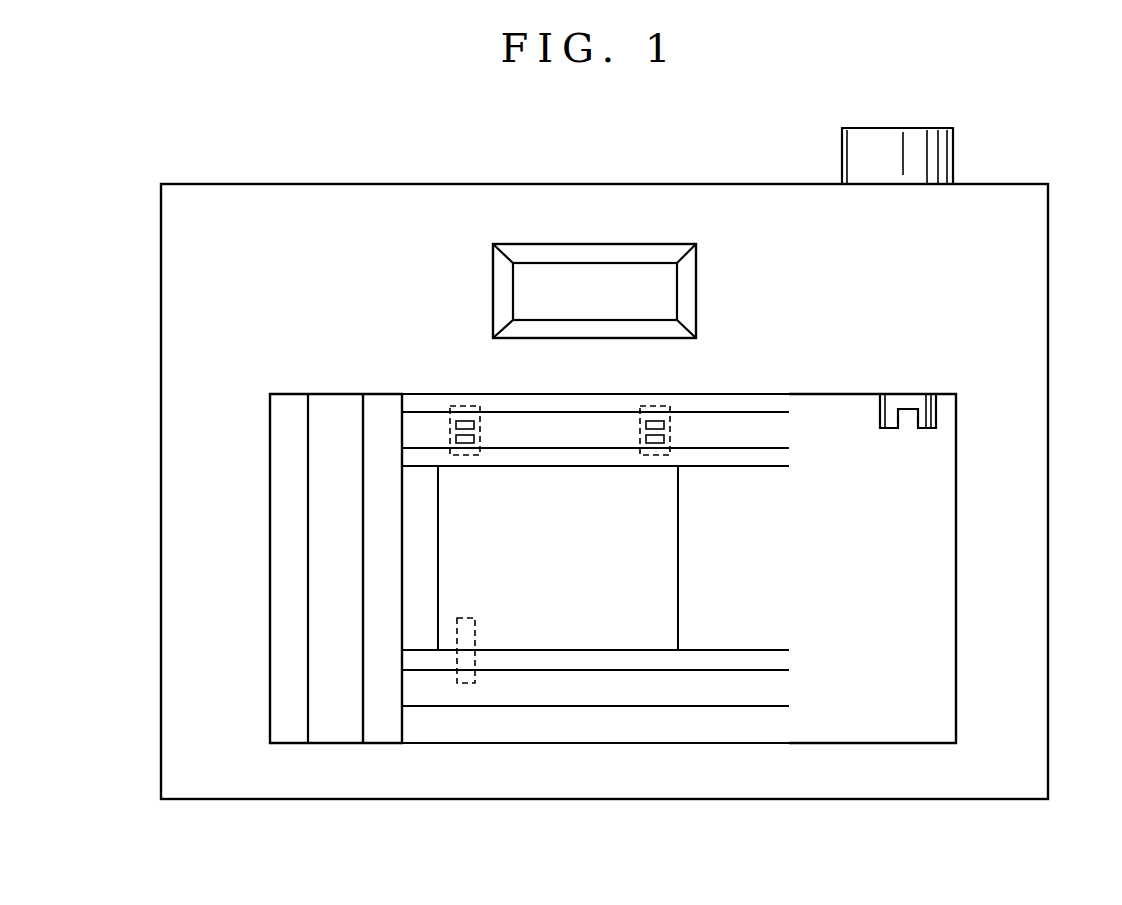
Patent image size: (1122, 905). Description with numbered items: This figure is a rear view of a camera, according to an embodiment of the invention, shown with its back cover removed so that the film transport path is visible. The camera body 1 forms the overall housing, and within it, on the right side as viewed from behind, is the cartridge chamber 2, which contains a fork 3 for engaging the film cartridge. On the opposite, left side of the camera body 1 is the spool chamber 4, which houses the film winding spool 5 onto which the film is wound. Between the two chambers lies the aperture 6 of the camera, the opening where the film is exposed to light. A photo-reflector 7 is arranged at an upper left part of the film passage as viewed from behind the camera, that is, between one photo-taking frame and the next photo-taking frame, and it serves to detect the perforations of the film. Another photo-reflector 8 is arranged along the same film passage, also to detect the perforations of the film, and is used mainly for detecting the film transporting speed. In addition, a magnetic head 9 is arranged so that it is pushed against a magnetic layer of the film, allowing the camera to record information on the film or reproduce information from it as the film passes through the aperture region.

The camera body 1 is at (778, 212).
The cartridge chamber 2 is at (945, 553).
The fork 3 is at (918, 403).
The spool chamber 4 is at (282, 575).
The film winding spool 5 is at (332, 730).
The aperture 6 is at (622, 635).
The photo-reflector 7 is at (465, 404).
The photo-reflector 8 is at (652, 405).
The magnetic head 9 is at (463, 685).